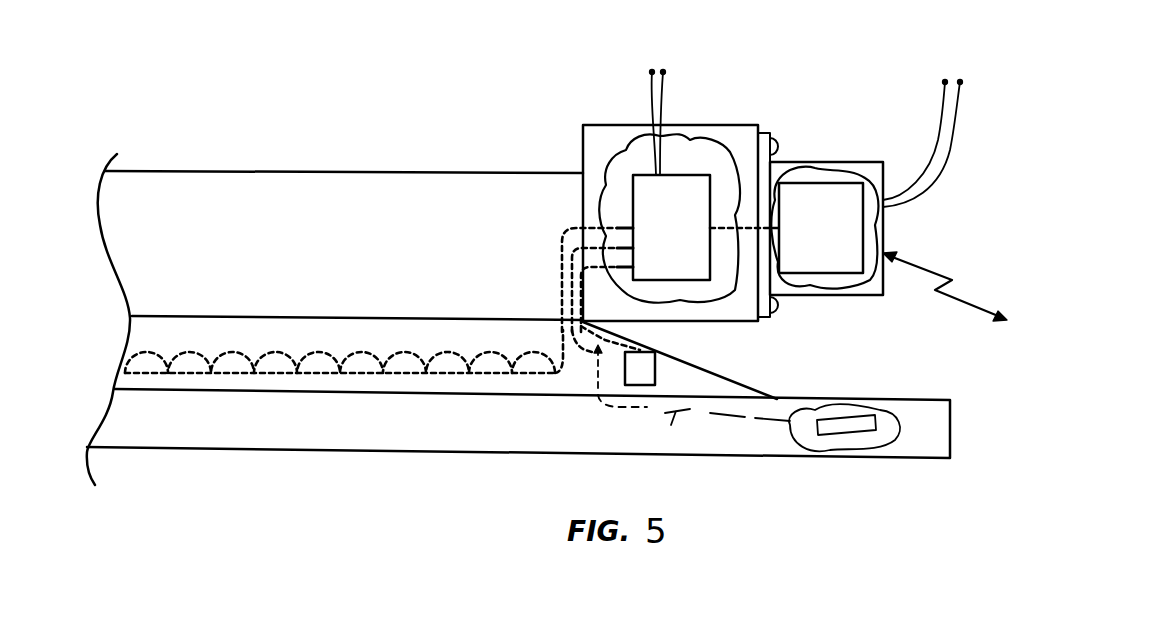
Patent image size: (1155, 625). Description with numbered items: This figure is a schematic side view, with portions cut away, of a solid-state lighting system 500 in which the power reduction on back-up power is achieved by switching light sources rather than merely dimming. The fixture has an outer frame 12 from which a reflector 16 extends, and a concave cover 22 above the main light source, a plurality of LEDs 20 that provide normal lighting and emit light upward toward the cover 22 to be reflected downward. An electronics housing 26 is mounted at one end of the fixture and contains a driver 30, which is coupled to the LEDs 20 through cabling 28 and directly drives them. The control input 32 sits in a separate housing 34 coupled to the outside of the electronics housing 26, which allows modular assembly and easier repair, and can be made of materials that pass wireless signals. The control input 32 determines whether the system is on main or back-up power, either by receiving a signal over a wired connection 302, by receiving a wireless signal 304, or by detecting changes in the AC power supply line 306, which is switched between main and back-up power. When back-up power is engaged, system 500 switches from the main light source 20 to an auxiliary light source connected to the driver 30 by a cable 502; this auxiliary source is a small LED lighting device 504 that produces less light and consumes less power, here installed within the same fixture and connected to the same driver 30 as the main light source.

The solid-state lighting system 500 is at (228, 81).
The concave cover 22 is at (258, 171).
The plurality of LEDs 20 is at (405, 352).
The cabling 28 is at (560, 270).
The electronics housing 26 is at (690, 124).
The driver 30 is at (663, 256).
The AC power supply line 306 is at (657, 99).
The separate housing 34 is at (800, 162).
The control input 32 is at (812, 254).
The wired connection 302 is at (955, 155).
The wireless signal 304 is at (969, 286).
The reflector 16 is at (715, 373).
The outer frame 12 is at (875, 400).
The LED lighting device 504 is at (875, 425).
The cable 502 is at (692, 399).